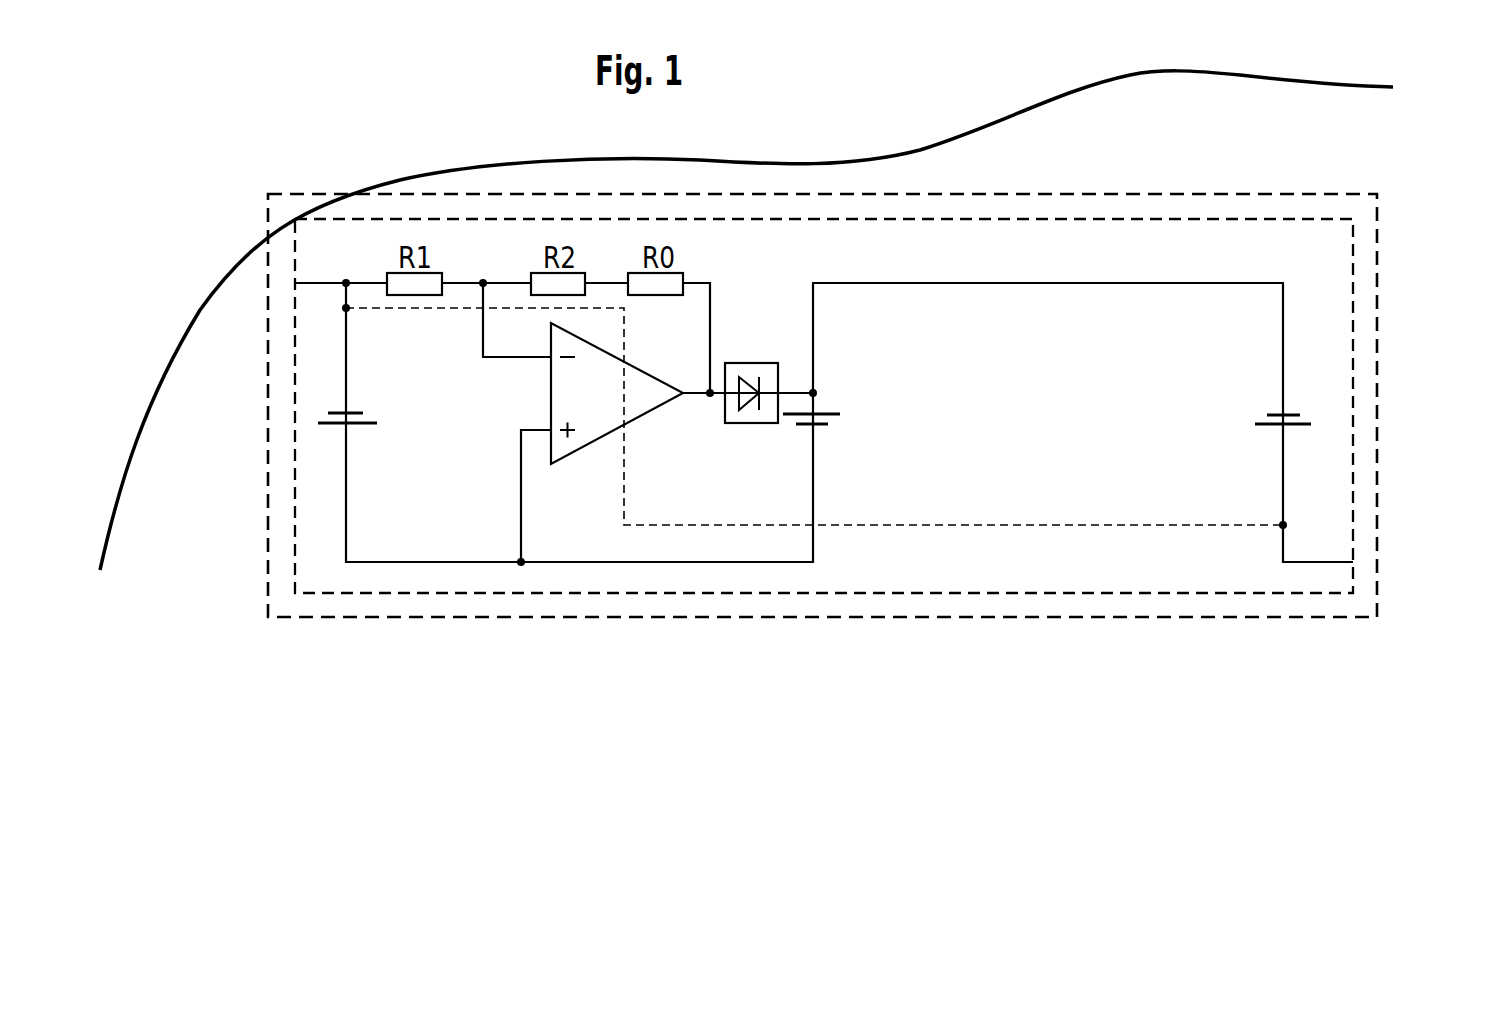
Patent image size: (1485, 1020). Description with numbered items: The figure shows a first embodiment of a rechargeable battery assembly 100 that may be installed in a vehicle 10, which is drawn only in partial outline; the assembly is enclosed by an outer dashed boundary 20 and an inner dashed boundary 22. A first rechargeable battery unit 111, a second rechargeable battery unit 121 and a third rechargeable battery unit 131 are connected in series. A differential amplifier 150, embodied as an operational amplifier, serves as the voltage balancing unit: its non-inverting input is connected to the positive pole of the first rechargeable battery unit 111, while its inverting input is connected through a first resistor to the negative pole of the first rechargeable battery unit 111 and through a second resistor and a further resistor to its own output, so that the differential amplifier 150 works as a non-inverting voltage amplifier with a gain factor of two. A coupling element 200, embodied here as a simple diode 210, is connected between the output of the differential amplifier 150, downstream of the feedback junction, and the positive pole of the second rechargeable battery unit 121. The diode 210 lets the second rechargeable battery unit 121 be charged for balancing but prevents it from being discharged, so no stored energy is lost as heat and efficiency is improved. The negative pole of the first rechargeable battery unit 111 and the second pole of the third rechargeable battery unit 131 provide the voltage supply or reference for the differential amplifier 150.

The vehicle 10 is at (1085, 95).
The housing 20 is at (1318, 193).
The inner housing region / shielding 22 is at (1353, 272).
The rechargeable battery assembly 100 is at (878, 266).
The first rechargeable battery unit 111 is at (338, 425).
The second rechargeable battery unit 121 is at (822, 412).
The third rechargeable battery unit 131 is at (1273, 413).
The differential amplifier 150 is at (580, 448).
The coupling element 200 is at (765, 420).
The diode 210 is at (745, 405).